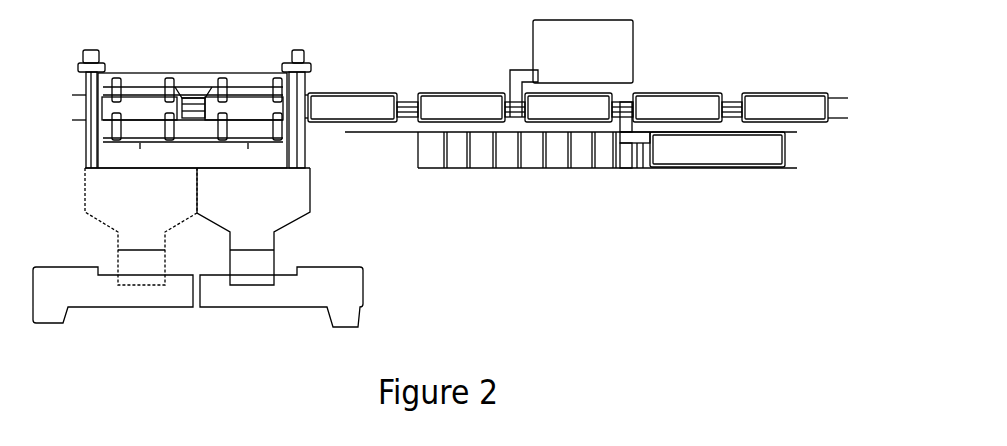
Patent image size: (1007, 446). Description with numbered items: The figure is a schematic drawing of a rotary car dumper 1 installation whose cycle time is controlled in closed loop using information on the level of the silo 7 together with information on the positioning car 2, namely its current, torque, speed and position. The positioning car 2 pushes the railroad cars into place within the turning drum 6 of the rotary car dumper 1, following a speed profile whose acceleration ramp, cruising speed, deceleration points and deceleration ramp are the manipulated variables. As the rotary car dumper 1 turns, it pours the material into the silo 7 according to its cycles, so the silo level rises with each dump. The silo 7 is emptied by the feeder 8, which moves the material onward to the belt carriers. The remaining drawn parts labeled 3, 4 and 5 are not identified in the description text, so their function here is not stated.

The rotary car dumper 1 is at (675, 310).
The positioning car 2 is at (723, 153).
The connecting bracket 3 is at (626, 125).
The control box 4 is at (517, 73).
The rollers 5 is at (213, 85).
The turning drum 6 is at (88, 92).
The silo 7 is at (102, 197).
The feeder 8 is at (360, 290).